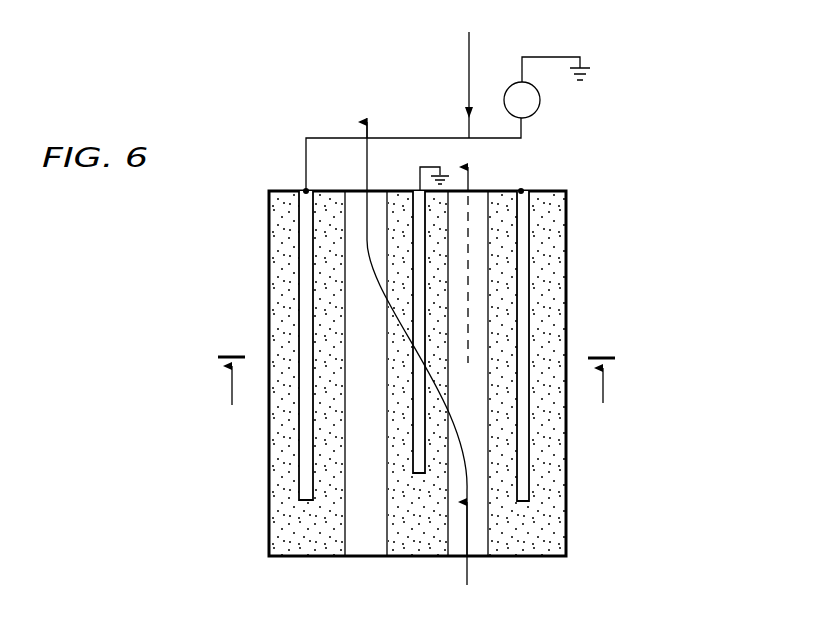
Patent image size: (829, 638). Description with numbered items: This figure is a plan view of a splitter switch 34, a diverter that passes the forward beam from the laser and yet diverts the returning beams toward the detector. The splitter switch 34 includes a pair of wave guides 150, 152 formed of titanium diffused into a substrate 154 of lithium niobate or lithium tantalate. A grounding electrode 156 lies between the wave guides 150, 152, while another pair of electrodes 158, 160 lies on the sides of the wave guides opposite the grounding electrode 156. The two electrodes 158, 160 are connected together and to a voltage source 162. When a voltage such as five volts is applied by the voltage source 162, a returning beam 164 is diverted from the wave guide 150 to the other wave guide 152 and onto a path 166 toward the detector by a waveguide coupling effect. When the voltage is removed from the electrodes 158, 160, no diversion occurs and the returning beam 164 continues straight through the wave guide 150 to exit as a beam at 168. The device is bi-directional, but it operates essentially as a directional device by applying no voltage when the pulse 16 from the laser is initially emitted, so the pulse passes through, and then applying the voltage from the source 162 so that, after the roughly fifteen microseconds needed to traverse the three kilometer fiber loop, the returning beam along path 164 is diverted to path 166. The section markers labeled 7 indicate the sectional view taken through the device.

The splitter switch 34 is at (253, 260).
The substrate 154 is at (568, 516).
The electrode 160 is at (304, 206).
The wave guide 152 is at (368, 549).
The grounding electrode 156 is at (417, 205).
The wave guide 150 is at (483, 556).
The exit beam 168 is at (470, 182).
The electrode 158 is at (528, 252).
The path 166 is at (365, 183).
The returning beam 164 is at (467, 570).
The pulse 16 is at (469, 65).
The voltage source 162 is at (536, 112).
The section line 7- 7 is at (416, 399).